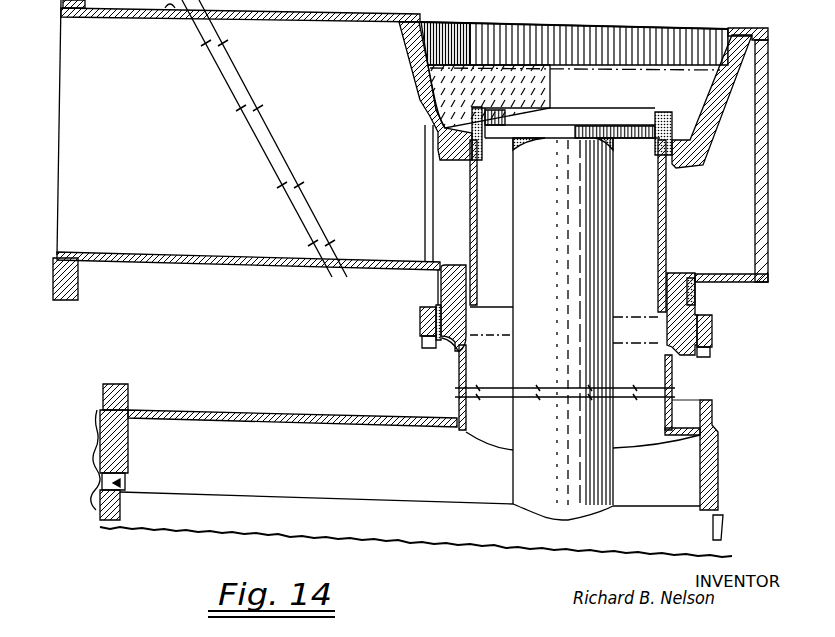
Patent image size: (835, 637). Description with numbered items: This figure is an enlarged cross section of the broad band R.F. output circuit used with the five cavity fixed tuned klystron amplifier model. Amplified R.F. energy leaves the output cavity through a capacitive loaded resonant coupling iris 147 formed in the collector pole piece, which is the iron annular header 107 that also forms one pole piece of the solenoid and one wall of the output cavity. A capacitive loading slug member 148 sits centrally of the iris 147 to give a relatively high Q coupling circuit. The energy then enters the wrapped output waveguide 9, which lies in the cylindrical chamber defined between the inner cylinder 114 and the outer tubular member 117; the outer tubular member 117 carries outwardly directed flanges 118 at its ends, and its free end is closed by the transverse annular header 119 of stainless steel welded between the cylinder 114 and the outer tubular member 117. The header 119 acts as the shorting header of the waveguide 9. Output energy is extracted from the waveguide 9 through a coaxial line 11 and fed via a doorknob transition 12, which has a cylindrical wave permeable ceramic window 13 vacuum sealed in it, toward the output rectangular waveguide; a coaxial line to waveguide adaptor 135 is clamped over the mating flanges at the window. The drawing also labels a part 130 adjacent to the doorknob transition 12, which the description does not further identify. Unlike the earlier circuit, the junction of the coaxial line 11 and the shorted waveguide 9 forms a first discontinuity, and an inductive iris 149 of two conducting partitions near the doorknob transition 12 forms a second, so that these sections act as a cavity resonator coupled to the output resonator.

The output waveguide 9 is at (255, 442).
The coaxial line 11 is at (449, 380).
The doorknob transition 12 is at (419, 132).
The cylindrical wave permeable window 13 is at (472, 208).
The annular header 107 is at (110, 515).
The cylinder 114 is at (365, 508).
The outer tubular member 117 is at (385, 415).
The outwardly directed flange 118 is at (690, 408).
The transverse annular header 119 is at (712, 410).
The lining 130 is at (422, 92).
The coaxial line to waveguide adaptor 135 is at (412, 330).
The capacitive loaded resonant coupling iris 147 is at (130, 485).
The capacitive loading slug member 148 is at (115, 452).
The inductive iris 149 is at (430, 211).